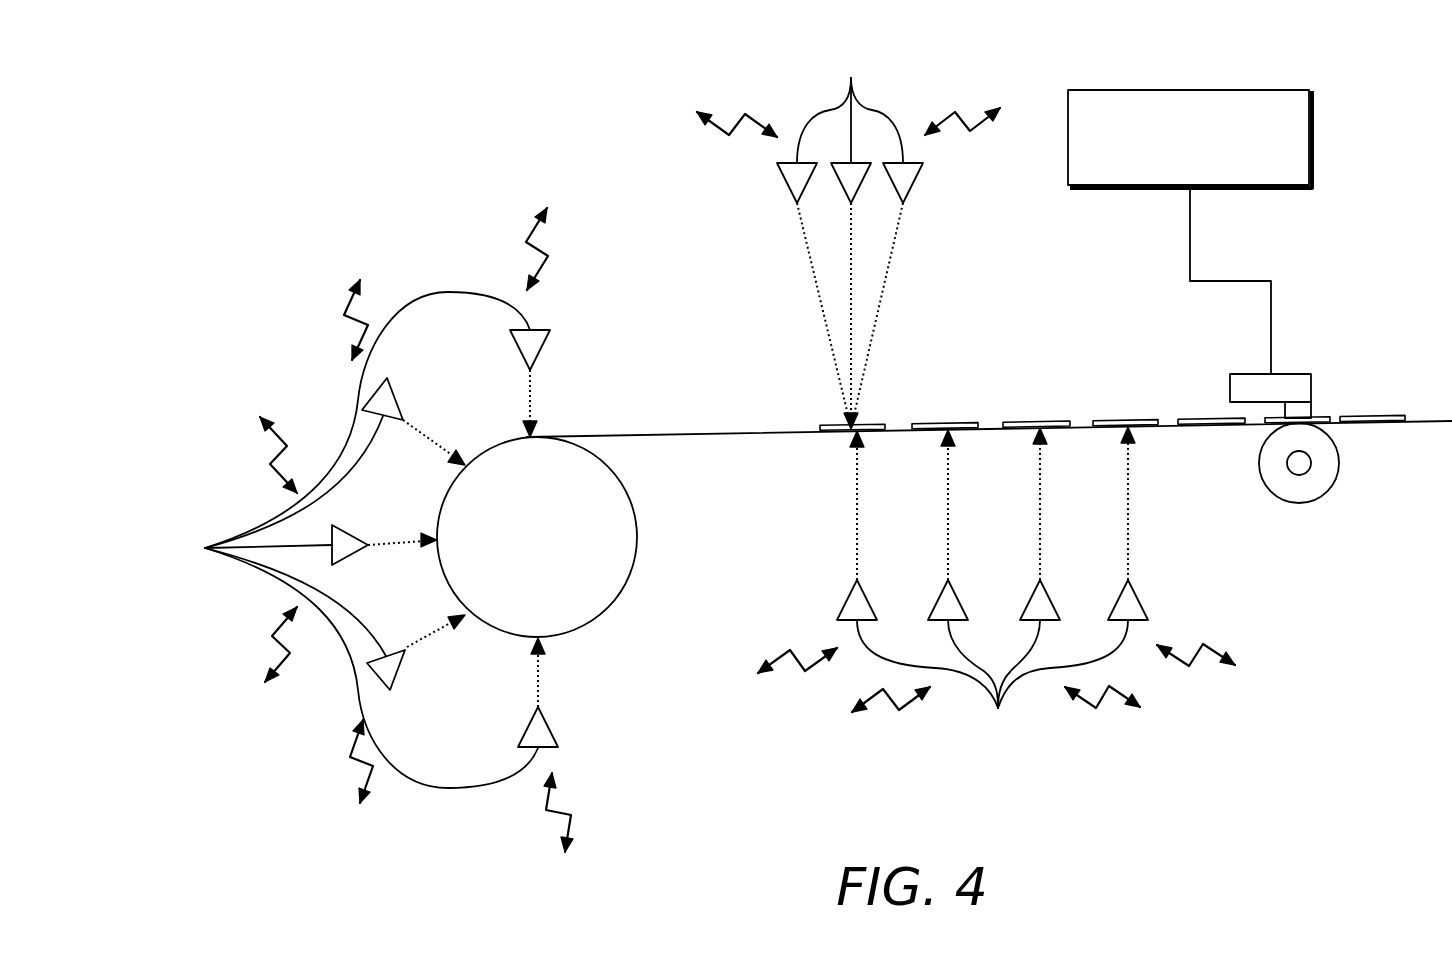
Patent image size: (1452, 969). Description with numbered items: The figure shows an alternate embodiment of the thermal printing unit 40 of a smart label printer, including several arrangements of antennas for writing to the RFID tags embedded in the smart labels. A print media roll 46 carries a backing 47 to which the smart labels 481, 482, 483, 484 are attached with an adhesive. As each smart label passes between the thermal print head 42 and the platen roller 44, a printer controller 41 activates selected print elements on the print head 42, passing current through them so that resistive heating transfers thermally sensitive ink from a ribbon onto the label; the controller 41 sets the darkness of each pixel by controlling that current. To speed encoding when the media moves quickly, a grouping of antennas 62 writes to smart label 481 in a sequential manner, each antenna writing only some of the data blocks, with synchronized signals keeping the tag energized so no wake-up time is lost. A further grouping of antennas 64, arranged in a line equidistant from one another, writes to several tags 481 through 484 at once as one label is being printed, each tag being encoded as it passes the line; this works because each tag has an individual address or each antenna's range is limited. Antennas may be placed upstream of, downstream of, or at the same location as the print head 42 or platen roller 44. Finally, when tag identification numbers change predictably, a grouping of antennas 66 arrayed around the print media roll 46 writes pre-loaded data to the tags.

The thermal printing unit 40 is at (497, 157).
The printer controller 41 is at (1314, 135).
The thermal print head 42 is at (1313, 412).
The platen roller 44 is at (1327, 495).
The print media roll 46 is at (607, 612).
The backing 47 is at (680, 434).
The smart label 481 is at (848, 422).
The smart label 482 is at (943, 423).
The smart label 483 is at (1042, 423).
The smart label 484 is at (1127, 422).
The grouping of antennas 62 is at (848, 235).
The grouping of antennas 64 is at (996, 589).
The grouping of antennas 66 is at (367, 530).